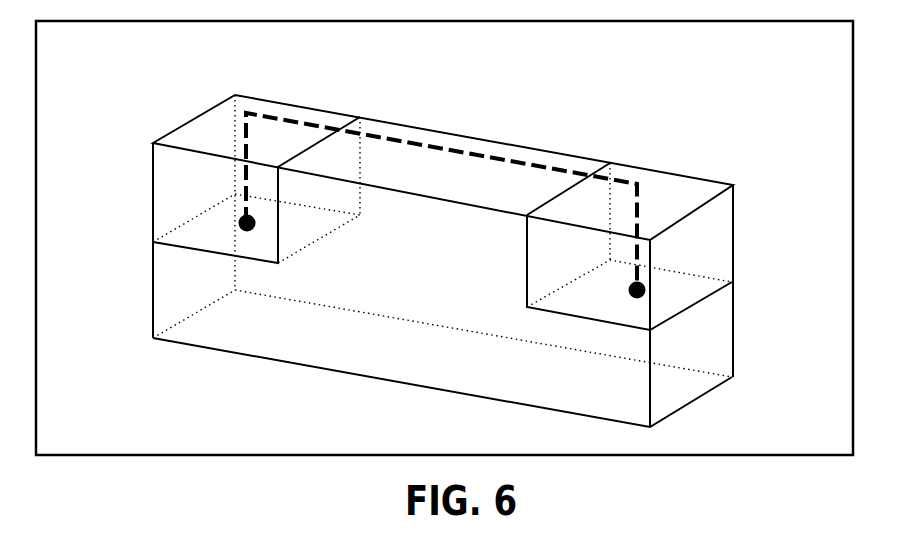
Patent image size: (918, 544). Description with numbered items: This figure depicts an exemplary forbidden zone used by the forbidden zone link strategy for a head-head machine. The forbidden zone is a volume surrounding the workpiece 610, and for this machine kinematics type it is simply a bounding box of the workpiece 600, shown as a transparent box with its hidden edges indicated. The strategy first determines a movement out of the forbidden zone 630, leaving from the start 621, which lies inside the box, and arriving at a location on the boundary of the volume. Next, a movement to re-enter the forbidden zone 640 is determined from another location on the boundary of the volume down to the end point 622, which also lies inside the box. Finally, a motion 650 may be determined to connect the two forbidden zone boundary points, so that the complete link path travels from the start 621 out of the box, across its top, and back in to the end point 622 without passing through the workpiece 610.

The bounding box of the workpiece 600 is at (315, 368).
The workpiece 610 is at (735, 231).
The start 621 is at (233, 224).
The end point 622 is at (655, 292).
The movement out of the forbidden zone 630 is at (243, 135).
The movement to re-enter the forbidden zone 640 is at (643, 202).
The motion 650 is at (432, 137).